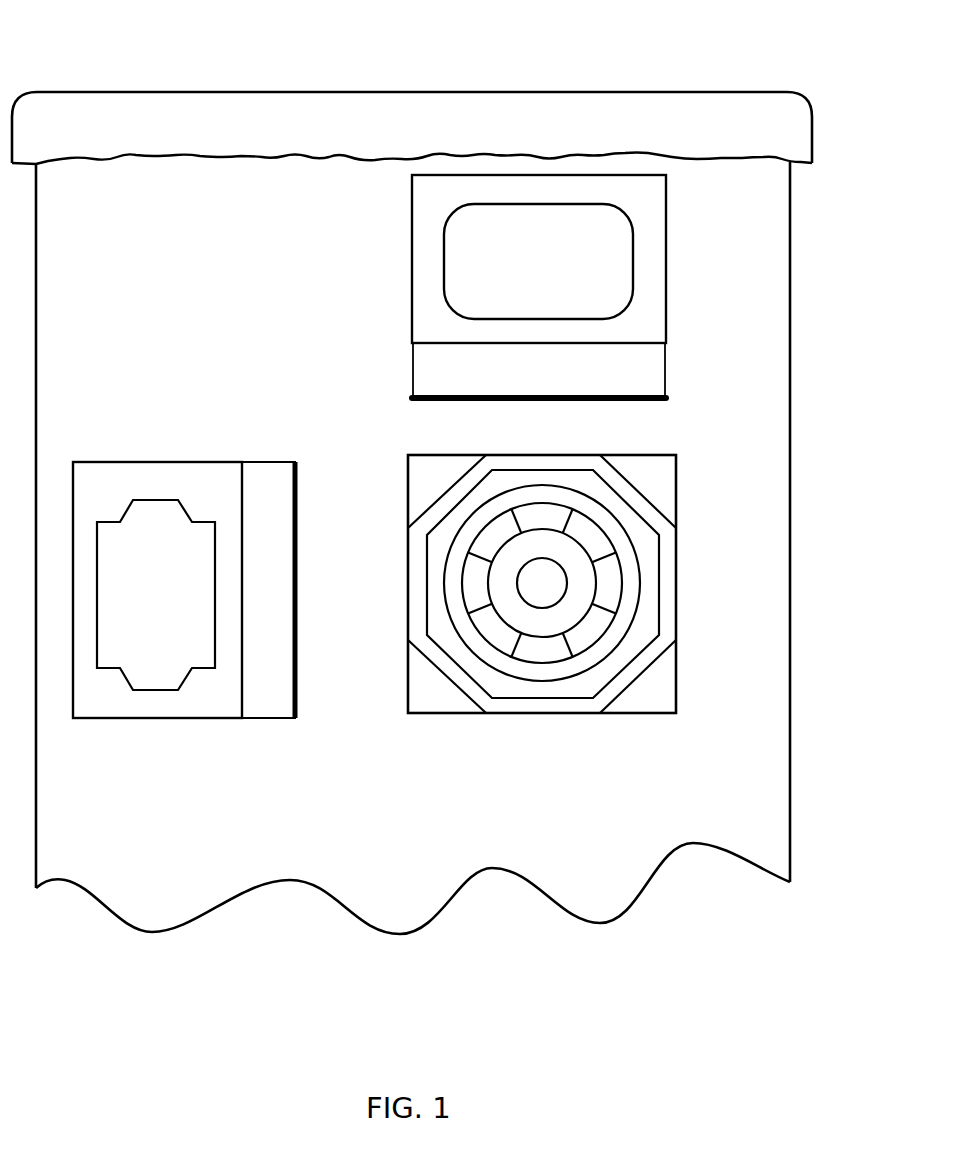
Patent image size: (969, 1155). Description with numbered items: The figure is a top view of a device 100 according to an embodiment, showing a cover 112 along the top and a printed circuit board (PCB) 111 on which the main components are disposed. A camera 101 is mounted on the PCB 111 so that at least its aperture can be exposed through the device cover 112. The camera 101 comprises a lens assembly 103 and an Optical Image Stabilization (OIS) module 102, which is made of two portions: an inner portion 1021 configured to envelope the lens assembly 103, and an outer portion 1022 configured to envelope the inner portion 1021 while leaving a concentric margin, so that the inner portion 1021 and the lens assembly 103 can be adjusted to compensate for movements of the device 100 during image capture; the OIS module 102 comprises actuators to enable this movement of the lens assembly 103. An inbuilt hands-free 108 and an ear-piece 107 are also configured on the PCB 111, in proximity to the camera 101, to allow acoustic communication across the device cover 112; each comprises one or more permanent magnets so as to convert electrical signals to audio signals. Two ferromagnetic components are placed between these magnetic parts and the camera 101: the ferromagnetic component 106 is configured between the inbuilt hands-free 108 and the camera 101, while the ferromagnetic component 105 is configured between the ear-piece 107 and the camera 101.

The device 100 is at (89, 44).
The camera 101 is at (699, 611).
The Optical Image Stabilization (OIS) module 102 is at (528, 766).
The inner portion 1021 is at (577, 642).
The outer portion 1022 is at (608, 670).
The lens assembly 103 is at (518, 566).
The ferromagnetic component 105 is at (298, 718).
The ferromagnetic component 106 is at (666, 398).
The ear-piece 107 is at (98, 718).
The inbuilt hands-free 108 is at (666, 282).
The printed circuit board (PCB) 111 is at (152, 341).
The cover 112 is at (632, 92).